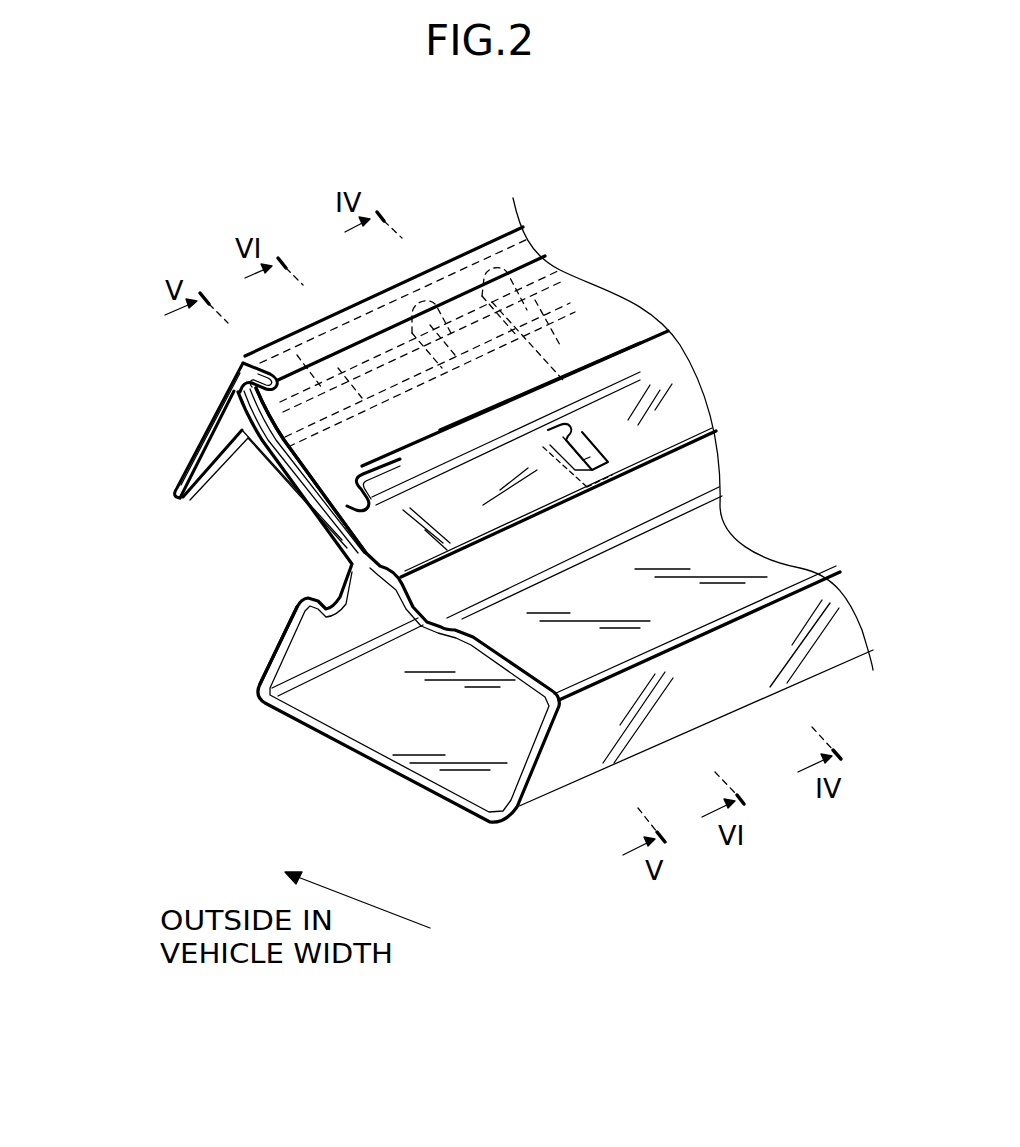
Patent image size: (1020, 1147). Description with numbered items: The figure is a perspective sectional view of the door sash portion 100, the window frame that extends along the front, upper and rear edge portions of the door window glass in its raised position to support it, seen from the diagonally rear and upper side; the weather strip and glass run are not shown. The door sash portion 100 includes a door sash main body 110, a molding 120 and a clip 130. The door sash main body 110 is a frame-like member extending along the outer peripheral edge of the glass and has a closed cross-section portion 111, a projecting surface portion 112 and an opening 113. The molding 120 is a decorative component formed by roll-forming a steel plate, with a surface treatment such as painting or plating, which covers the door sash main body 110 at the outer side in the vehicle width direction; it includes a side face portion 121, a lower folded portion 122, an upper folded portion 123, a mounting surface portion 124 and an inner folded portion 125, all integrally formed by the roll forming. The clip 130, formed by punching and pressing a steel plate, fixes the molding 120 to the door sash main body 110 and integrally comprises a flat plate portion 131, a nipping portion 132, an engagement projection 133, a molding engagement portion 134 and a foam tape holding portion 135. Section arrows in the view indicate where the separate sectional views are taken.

The door sash portion 100 is at (805, 340).
The door sash main body 110 is at (465, 542).
The closed cross-section portion 111 is at (270, 668).
The projecting surface portion 112 is at (303, 495).
The opening 113 is at (600, 468).
The molding 120 is at (153, 403).
The side face portion 121 is at (190, 447).
The lower folded portion 122 is at (180, 491).
The upper folded portion 123 is at (243, 363).
The mounting surface portion 124 is at (600, 325).
The inner folded portion 125 is at (620, 362).
The clip 130 is at (495, 341).
The flat plate portion 131 is at (388, 538).
The nipping portion 132 is at (538, 345).
The engagement projection 133 is at (573, 447).
The molding engagement portion 134 is at (215, 433).
The foam tape holding portion 135 is at (236, 381).